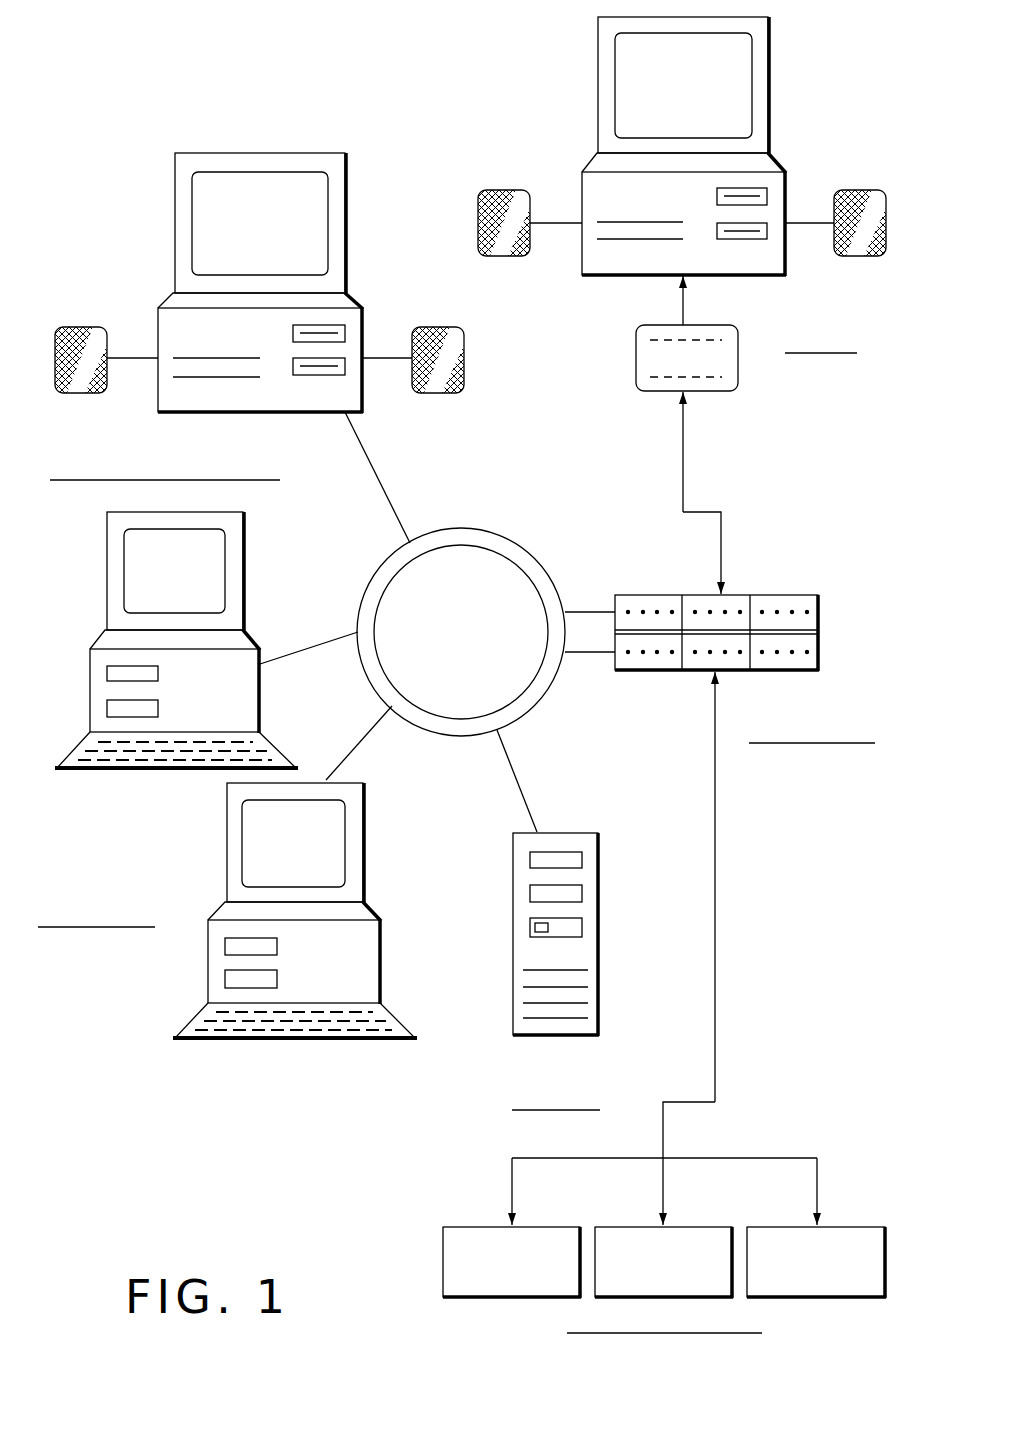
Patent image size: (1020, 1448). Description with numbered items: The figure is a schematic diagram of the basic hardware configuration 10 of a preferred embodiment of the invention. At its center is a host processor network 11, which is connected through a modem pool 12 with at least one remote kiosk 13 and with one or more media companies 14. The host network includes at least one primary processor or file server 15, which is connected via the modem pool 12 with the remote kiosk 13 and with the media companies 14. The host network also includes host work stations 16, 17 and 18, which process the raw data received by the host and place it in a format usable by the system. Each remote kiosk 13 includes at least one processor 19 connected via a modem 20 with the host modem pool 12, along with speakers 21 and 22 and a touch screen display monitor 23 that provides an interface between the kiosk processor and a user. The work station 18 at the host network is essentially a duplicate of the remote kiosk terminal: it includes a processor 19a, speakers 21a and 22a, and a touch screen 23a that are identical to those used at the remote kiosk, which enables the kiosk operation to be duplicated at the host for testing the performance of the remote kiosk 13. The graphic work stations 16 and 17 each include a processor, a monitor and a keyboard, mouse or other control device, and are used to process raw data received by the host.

The basic hardware configuration 10 is at (338, 1153).
The host processor network 11 is at (512, 525).
The modem pool 12 is at (790, 592).
The remote kiosk 13 is at (683, 304).
The media companies 14 is at (752, 1148).
The file server 15 is at (600, 928).
The host work station 16 is at (276, 927).
The host work station 17 is at (189, 712).
The host work station 18 is at (275, 296).
The processor 19 is at (786, 178).
The processor 19a is at (360, 300).
The modem 20 is at (634, 358).
The speaker 21 is at (515, 190).
The speaker 21a is at (80, 327).
The speaker 22 is at (846, 190).
The speaker 22a is at (437, 327).
The touch screen display monitor 23 is at (768, 75).
The touch screen 23a is at (348, 187).